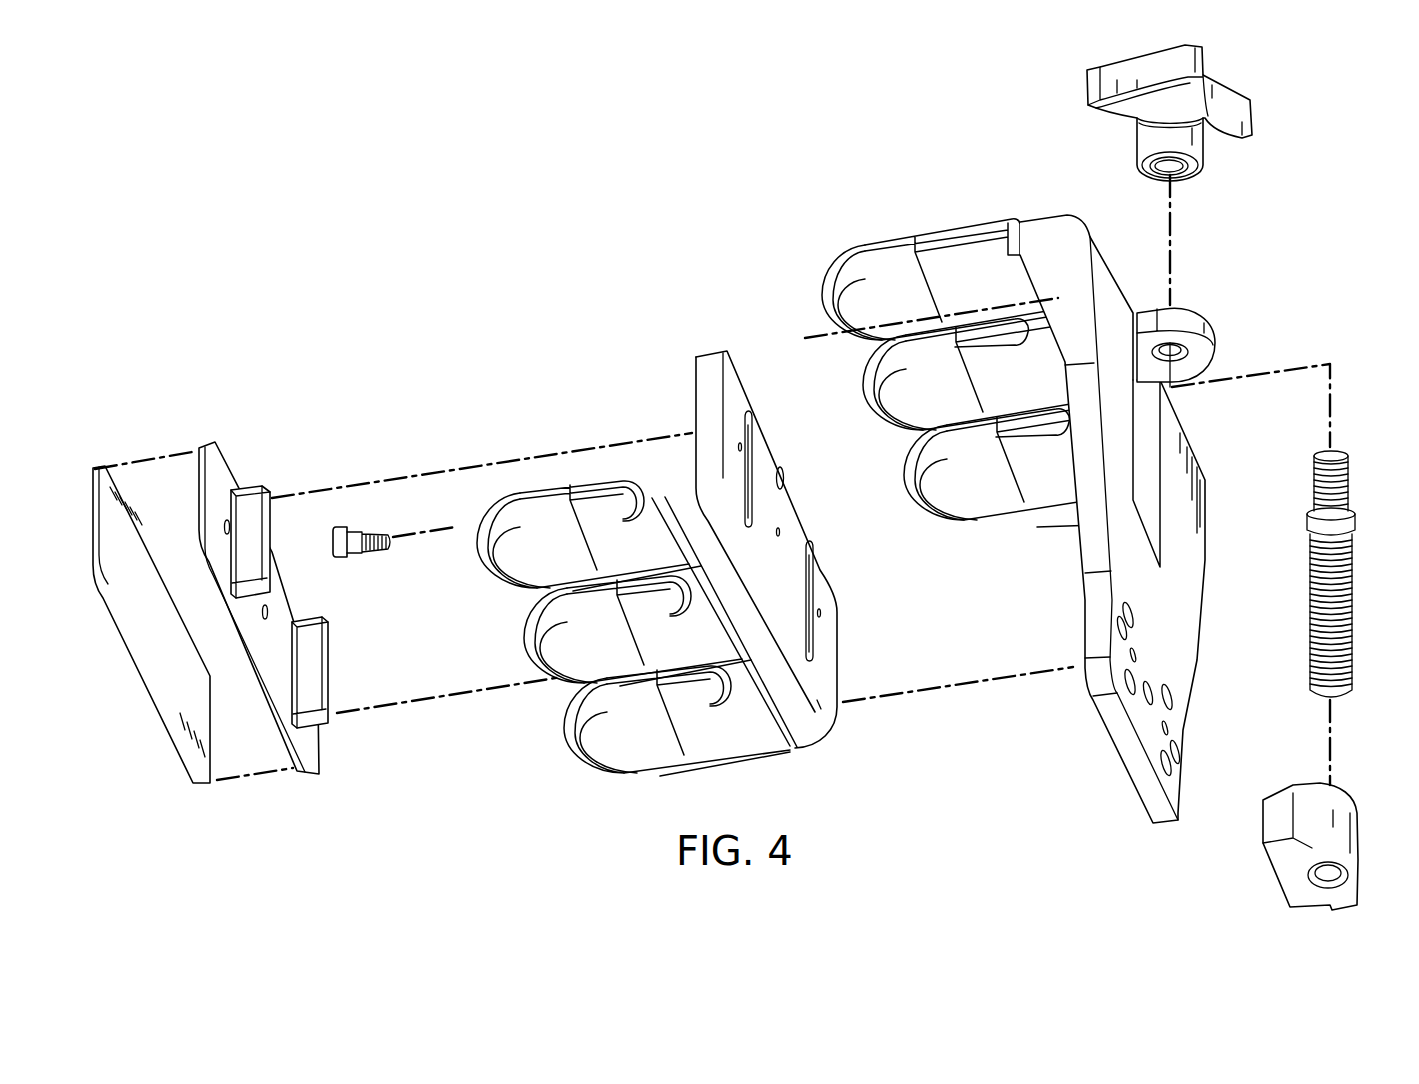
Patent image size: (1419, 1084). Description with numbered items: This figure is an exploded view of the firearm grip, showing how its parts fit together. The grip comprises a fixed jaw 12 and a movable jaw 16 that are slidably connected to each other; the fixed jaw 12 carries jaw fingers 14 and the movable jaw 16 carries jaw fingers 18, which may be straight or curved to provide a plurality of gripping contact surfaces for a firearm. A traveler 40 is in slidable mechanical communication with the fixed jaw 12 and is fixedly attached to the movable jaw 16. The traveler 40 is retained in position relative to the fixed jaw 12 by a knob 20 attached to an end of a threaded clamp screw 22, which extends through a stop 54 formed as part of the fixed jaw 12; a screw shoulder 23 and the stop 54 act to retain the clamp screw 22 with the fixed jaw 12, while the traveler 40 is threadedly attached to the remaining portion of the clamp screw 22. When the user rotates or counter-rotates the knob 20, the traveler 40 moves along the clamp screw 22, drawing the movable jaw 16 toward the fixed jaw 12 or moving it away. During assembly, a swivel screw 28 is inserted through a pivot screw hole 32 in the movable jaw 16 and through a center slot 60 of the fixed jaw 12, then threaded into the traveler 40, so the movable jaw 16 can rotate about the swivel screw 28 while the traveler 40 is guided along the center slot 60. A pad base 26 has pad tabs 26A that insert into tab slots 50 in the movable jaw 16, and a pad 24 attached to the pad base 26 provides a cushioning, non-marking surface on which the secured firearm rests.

The fixed jaw 12 is at (1197, 665).
The jaw fingers 14 is at (887, 240).
The movable jaw 16 is at (840, 626).
The jaw fingers 18 is at (624, 762).
The knob 20 is at (1256, 119).
The threaded clamp screw 22 is at (1352, 607).
The screw shoulder 23 is at (1352, 520).
The pad 24 is at (142, 680).
The pad base 26 is at (275, 720).
The pad tabs 26A is at (247, 483).
The swivel screw 28 is at (353, 558).
The pivot screw hole 32 is at (783, 475).
The traveler 40 is at (1335, 905).
The tab slots 50 is at (757, 458).
The stop 54 is at (1190, 308).
The center slot 60 is at (1153, 517).